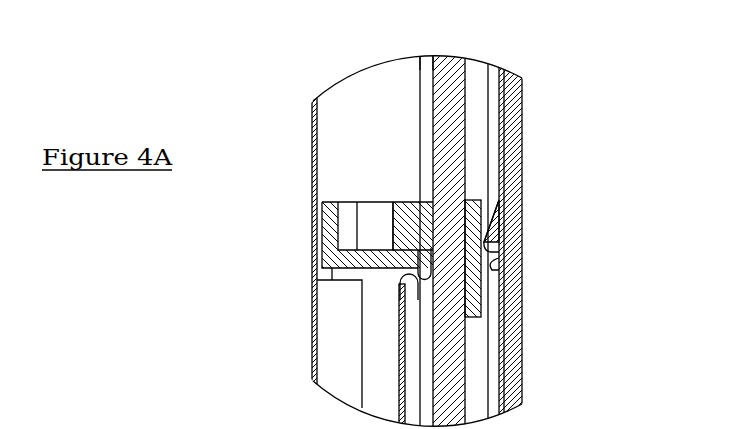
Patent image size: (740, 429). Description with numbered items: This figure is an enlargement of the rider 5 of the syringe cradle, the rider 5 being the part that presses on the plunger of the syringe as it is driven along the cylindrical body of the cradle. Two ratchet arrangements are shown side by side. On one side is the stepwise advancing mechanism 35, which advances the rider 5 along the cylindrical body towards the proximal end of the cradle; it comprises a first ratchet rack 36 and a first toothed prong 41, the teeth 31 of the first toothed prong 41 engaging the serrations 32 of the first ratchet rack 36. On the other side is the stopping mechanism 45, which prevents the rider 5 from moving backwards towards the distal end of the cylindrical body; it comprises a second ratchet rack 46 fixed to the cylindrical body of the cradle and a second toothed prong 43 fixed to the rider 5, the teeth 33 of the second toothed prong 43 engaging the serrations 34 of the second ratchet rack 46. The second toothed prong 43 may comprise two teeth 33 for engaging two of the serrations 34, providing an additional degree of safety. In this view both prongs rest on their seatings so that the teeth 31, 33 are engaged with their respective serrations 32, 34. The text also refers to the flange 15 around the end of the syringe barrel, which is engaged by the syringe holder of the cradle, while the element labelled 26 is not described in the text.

The rider 5 is at (322, 238).
The flange 15 is at (417, 272).
The lower member 26 is at (247, 425).
The teeth of the first toothed prong 31 is at (435, 245).
The serrations of the first ratchet rack 32 is at (433, 100).
The teeth of the second toothed prong 33 is at (503, 222).
The serrations of the second ratchet rack 34 is at (505, 112).
The stepwise advancing mechanism 35 is at (455, 44).
The first ratchet rack 36 is at (442, 82).
The first toothed prong 41 is at (418, 250).
The second toothed prong 43 is at (488, 259).
The stopping mechanism 45 is at (521, 63).
The second ratchet rack 46 is at (522, 72).